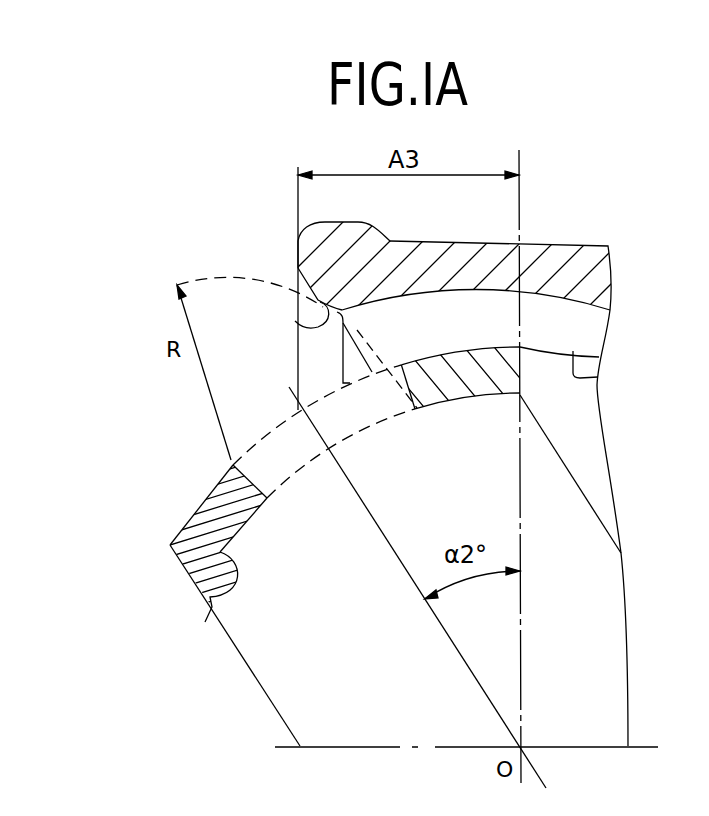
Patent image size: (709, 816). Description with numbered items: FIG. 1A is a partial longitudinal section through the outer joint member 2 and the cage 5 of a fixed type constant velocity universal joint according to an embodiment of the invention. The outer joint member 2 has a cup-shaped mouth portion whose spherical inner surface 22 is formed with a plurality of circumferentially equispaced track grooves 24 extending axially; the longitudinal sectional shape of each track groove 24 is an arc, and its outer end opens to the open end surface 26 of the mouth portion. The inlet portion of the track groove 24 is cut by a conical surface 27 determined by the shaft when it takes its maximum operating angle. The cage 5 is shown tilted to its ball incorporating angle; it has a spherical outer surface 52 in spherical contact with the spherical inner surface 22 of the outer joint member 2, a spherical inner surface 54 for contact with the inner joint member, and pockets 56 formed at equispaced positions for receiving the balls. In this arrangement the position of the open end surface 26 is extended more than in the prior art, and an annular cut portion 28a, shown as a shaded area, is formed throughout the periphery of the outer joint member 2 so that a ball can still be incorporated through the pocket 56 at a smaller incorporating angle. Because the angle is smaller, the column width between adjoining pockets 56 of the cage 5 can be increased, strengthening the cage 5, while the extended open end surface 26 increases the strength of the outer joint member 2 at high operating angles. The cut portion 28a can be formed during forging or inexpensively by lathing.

The outer joint member 2 is at (547, 255).
The cage 5 is at (218, 553).
The spherical inner surface 22 is at (580, 378).
The track groove 24 is at (590, 330).
The open end surface 26 is at (298, 262).
The conical surface 27 is at (357, 360).
The annular cut portion 28a is at (340, 326).
The spherical outer surface 52 is at (206, 500).
The spherical inner surface 54 is at (203, 605).
The pocket 56 is at (258, 488).